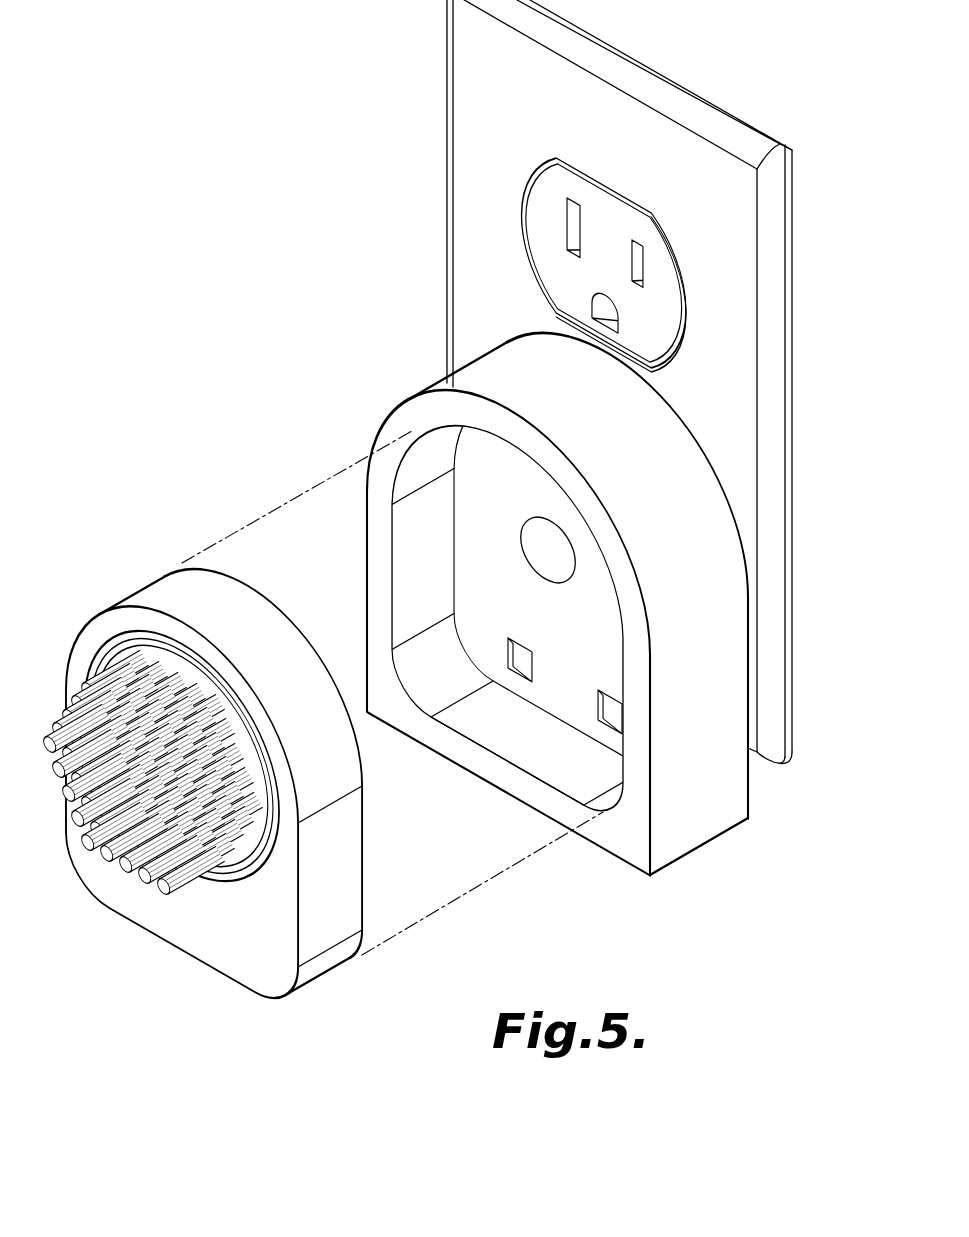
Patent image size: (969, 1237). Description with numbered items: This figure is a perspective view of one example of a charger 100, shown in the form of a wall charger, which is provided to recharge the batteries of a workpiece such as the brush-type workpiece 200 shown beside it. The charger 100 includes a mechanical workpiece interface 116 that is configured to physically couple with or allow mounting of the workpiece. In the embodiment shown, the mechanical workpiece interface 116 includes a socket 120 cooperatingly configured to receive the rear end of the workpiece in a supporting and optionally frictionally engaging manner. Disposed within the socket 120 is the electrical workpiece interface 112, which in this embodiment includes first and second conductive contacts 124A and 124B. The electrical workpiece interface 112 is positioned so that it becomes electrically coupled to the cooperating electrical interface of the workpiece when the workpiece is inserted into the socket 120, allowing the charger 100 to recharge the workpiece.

The charger 100 is at (710, 848).
The electrical workpiece interface 112 is at (565, 695).
The mechanical workpiece interface 116 is at (422, 457).
The socket 120 is at (420, 543).
The first conductive contact 124A is at (517, 660).
The second conductive contact 124B is at (615, 722).
The brush head 200 is at (103, 602).